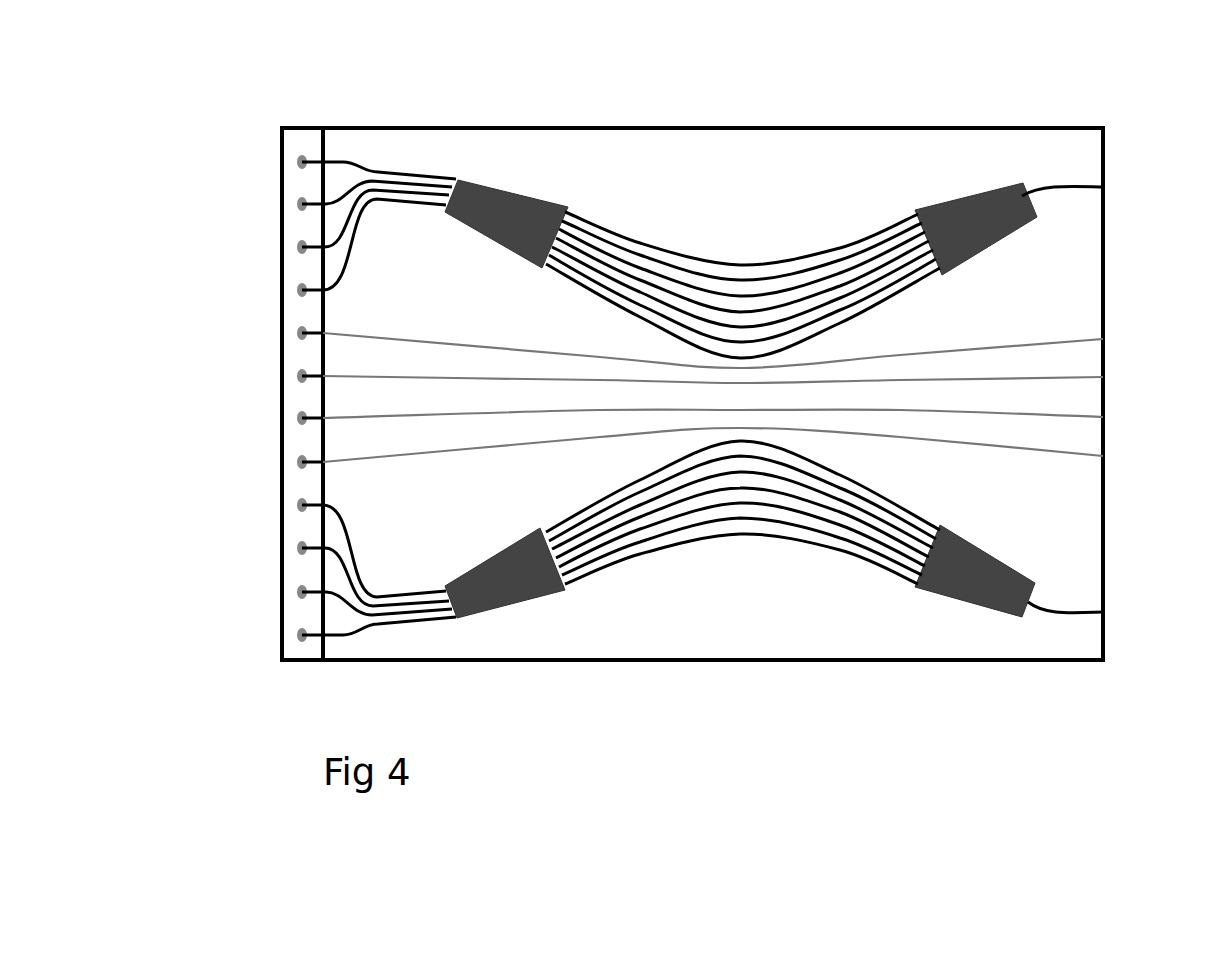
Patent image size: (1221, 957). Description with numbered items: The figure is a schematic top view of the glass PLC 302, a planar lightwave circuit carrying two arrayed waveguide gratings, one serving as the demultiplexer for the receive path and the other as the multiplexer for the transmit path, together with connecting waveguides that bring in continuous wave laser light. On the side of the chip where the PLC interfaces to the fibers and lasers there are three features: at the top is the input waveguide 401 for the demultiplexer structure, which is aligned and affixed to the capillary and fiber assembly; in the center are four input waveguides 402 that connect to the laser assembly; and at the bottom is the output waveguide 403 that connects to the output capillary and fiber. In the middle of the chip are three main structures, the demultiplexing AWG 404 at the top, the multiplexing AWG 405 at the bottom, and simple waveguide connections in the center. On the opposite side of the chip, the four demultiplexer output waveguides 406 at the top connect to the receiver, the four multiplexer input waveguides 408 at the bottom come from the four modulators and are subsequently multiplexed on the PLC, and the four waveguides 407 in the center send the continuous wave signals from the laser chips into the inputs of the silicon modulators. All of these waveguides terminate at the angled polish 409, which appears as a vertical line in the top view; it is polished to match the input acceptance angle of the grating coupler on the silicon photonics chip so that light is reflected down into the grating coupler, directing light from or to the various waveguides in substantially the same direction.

The PLC 302 is at (607, 127).
The input waveguide 401 is at (1099, 190).
The input waveguides 402 is at (1117, 327).
The output waveguide 403 is at (1102, 615).
The demultiplexing AWG 404 is at (741, 269).
The multiplexing AWG 405 is at (740, 529).
The demultiplexer output waveguides 406 is at (270, 145).
The waveguides 407 is at (270, 315).
The multiplexer input waveguides 408 is at (270, 500).
The angled polish 409 is at (300, 126).